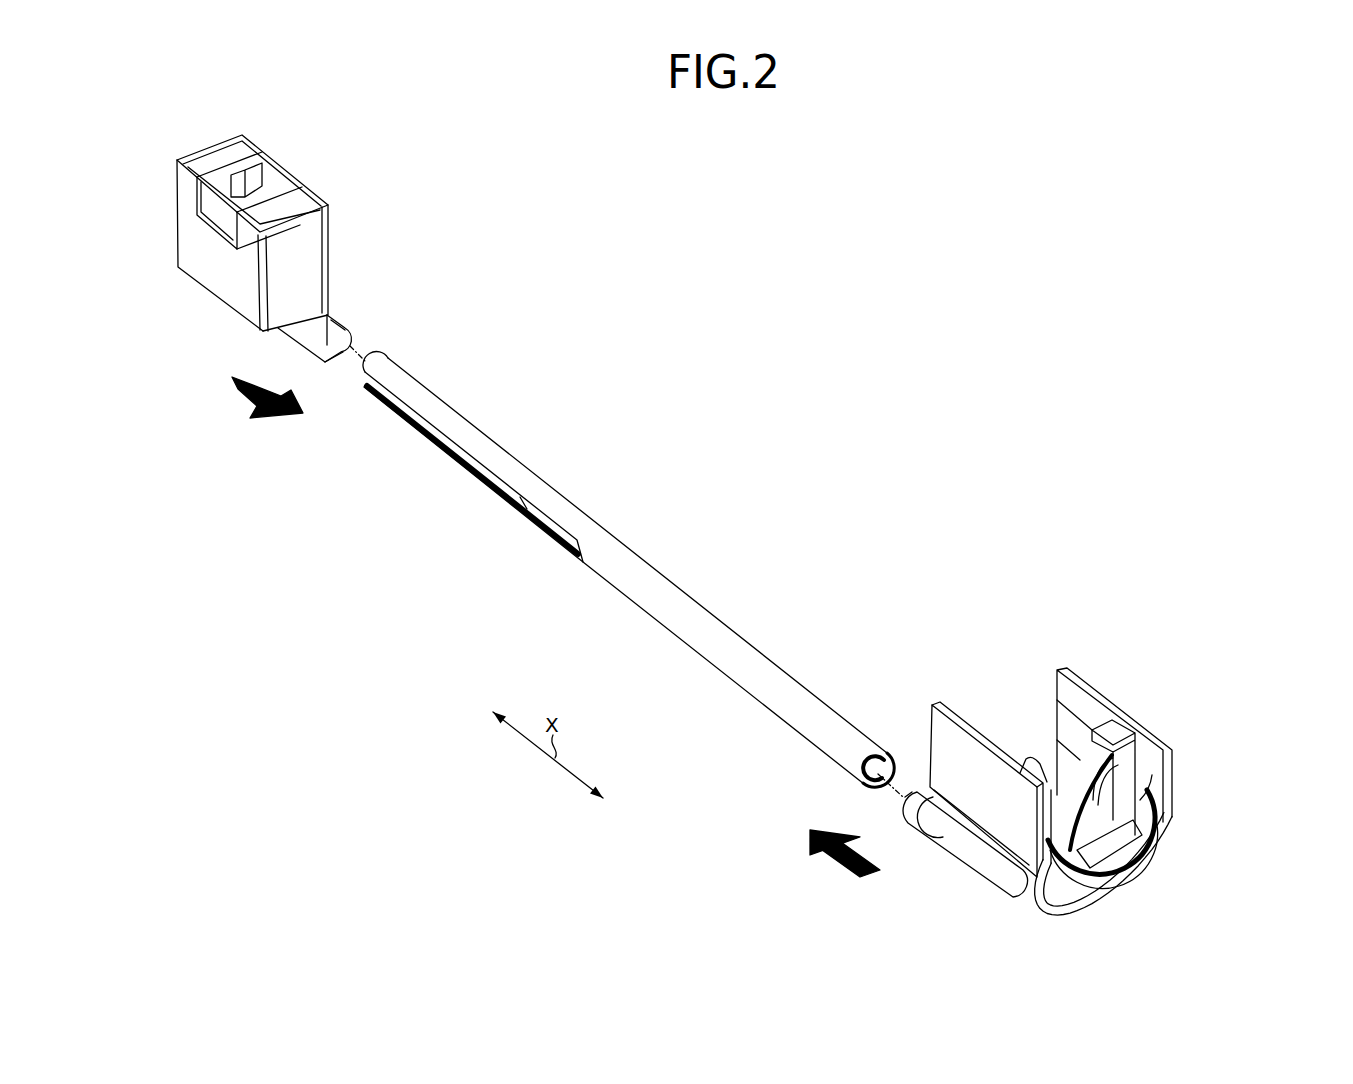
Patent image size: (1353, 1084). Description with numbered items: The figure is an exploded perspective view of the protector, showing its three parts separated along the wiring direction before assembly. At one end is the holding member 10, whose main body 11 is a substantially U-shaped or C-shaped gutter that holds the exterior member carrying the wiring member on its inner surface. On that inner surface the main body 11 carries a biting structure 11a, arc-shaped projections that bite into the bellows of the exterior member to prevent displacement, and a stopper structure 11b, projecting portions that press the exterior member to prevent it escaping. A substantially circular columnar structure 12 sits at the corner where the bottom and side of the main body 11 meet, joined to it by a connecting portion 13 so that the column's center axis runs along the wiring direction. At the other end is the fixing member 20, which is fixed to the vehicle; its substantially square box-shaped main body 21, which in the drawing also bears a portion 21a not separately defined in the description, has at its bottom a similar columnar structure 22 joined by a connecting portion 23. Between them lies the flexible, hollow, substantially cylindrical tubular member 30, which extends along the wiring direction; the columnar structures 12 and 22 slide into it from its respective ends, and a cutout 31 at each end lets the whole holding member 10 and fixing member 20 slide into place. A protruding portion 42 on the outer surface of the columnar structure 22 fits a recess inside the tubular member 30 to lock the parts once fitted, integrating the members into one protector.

The holding member 10 is at (1085, 783).
The main body 11 is at (987, 793).
The biting structure 11a is at (1143, 797).
The stopper structure 11b is at (1112, 722).
The columnar structure 12 is at (995, 870).
The connecting portion 13 is at (1041, 880).
The fixing member 20 is at (271, 295).
The main body 21 is at (228, 232).
The groove / locking projection 21a is at (230, 190).
The columnar structure 22 is at (344, 365).
The connecting portion 23 is at (337, 360).
The tubular member 30 is at (633, 560).
The cutout 31 is at (448, 445).
The protruding portion 42 is at (905, 797).